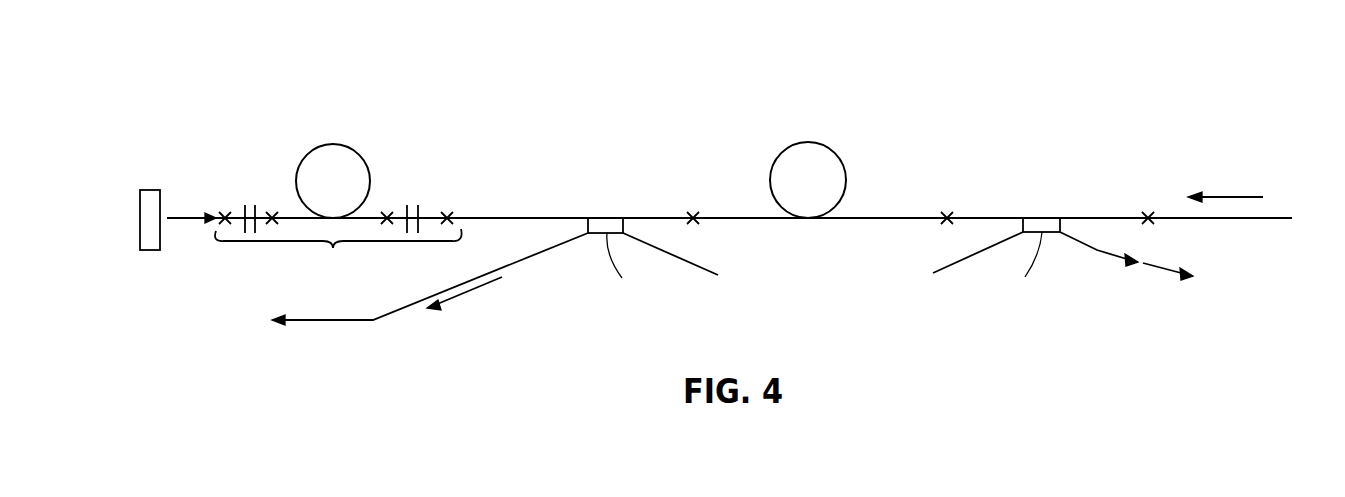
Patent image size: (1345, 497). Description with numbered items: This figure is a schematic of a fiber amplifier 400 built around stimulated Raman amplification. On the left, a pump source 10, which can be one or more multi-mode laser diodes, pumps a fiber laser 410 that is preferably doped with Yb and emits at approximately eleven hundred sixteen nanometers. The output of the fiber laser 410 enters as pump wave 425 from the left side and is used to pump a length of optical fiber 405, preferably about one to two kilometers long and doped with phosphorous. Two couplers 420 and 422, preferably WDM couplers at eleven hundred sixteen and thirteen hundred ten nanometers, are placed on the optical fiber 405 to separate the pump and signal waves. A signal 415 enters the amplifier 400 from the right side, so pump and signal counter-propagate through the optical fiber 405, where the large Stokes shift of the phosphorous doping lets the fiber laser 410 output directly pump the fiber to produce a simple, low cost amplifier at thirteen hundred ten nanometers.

The amplifier 400 is at (262, 78).
The pump source 10 is at (140, 191).
The pump wave 425 is at (192, 222).
The fiber laser 410 is at (332, 197).
The coupler 422 is at (613, 217).
The optical fiber 405 is at (752, 217).
The signal 415 is at (1267, 160).
The coupler 420 is at (1057, 232).